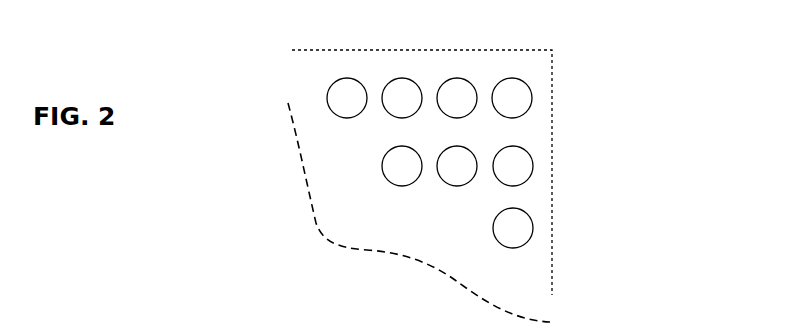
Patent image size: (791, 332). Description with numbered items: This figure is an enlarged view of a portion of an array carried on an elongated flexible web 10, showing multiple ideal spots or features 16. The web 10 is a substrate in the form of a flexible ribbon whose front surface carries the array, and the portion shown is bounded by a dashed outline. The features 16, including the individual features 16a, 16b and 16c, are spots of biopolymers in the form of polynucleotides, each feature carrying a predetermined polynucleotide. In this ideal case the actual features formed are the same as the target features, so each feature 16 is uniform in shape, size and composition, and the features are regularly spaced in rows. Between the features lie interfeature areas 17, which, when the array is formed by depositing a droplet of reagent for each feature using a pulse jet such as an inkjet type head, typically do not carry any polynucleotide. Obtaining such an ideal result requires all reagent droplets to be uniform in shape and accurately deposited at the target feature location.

The elongated flexible web 10 is at (540, 255).
The feature 16 is at (533, 220).
The feature 16a is at (386, 174).
The feature 16b is at (457, 167).
The feature 16c is at (513, 165).
The interfeature area 17 is at (429, 92).